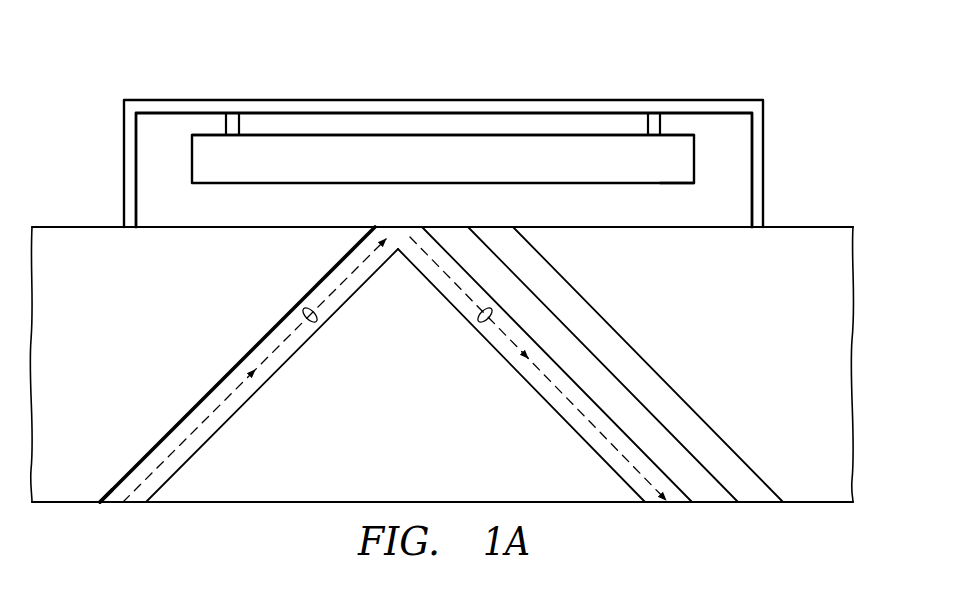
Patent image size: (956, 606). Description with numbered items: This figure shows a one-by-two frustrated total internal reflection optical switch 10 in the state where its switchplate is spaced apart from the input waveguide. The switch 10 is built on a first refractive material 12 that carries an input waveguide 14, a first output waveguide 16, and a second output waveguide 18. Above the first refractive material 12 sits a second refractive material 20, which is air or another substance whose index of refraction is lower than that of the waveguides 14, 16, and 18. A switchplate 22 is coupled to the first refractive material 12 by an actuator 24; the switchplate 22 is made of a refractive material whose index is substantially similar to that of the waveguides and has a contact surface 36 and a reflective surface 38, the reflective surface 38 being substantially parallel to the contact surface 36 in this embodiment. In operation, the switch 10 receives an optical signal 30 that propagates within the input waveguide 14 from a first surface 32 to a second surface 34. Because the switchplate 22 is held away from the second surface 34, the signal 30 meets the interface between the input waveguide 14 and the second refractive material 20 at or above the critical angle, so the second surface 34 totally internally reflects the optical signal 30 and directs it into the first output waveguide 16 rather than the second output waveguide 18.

The frustrated total internal reflection optical switch 10 is at (182, 62).
The first refractive material 12 is at (106, 297).
The input waveguide 14 is at (273, 373).
The first output waveguide 16 is at (520, 377).
The second output waveguide 18 is at (647, 362).
The second refractive material 20 is at (227, 201).
The switchplate 22 is at (458, 172).
The actuator 24 is at (765, 170).
The optical signal 30 is at (316, 322).
The first surface 32 is at (112, 505).
The second surface 34 is at (405, 225).
The contact surface 36 is at (682, 183).
The reflective surface 38 is at (522, 135).